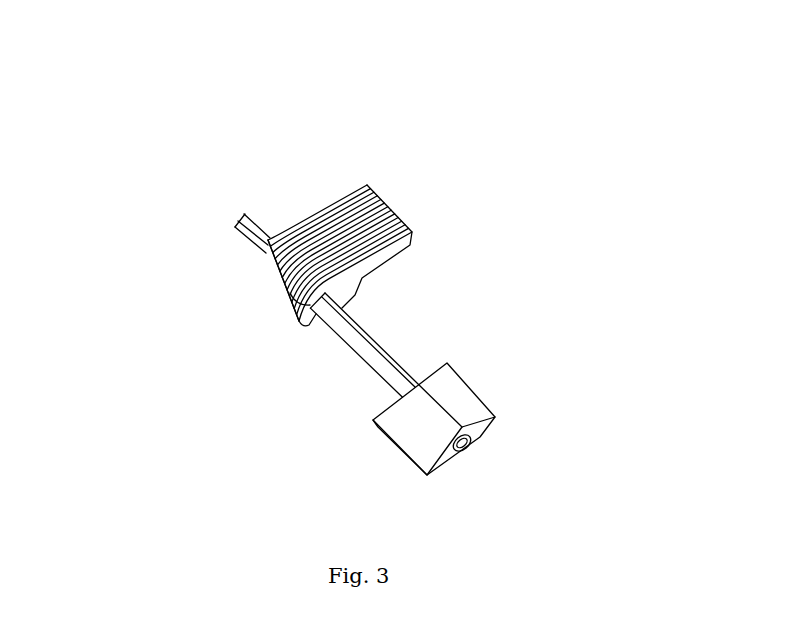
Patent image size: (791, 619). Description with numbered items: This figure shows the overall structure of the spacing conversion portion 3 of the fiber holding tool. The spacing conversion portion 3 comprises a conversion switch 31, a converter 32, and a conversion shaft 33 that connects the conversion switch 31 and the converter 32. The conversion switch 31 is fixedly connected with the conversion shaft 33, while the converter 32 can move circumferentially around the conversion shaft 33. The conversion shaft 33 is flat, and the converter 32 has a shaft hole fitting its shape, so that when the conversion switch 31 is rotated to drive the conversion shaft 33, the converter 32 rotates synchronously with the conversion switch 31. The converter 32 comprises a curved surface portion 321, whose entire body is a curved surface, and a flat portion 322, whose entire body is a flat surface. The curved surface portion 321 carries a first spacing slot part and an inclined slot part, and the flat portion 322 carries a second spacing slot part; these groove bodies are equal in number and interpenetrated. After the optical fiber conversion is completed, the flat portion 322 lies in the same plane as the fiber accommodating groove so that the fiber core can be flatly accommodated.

The spacing conversion portion 3 is at (359, 237).
The conversion switch 31 is at (503, 400).
The converter 32 is at (339, 200).
The curved surface portion 321 is at (240, 260).
The flat portion 322 is at (366, 206).
The conversion shaft 33 is at (402, 336).